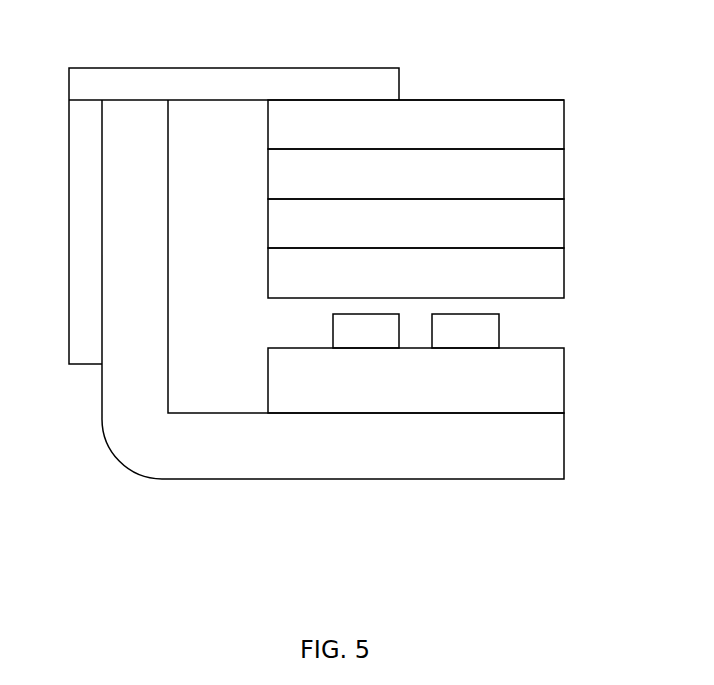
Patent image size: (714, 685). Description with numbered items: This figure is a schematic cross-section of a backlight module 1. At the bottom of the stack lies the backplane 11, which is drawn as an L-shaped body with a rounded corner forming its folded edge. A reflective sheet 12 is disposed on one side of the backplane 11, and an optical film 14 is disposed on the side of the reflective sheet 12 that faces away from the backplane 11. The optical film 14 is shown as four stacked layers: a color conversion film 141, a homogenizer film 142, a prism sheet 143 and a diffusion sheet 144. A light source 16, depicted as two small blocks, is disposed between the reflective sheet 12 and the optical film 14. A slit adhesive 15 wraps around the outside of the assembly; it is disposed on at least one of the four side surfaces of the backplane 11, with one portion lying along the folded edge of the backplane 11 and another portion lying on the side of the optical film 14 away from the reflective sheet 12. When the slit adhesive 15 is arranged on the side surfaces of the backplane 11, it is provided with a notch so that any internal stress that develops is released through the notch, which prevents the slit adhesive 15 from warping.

The backlight module 1 is at (55, 46).
The backplane 11 is at (540, 453).
The reflective sheet 12 is at (540, 397).
The optical film 14 is at (340, 355).
The color conversion film 141 is at (547, 275).
The homogenizer film 142 is at (547, 222).
The prism sheet 143 is at (540, 167).
The diffusion sheet 144 is at (547, 132).
The slit adhesive 15 is at (388, 84).
The light source 16 is at (482, 331).